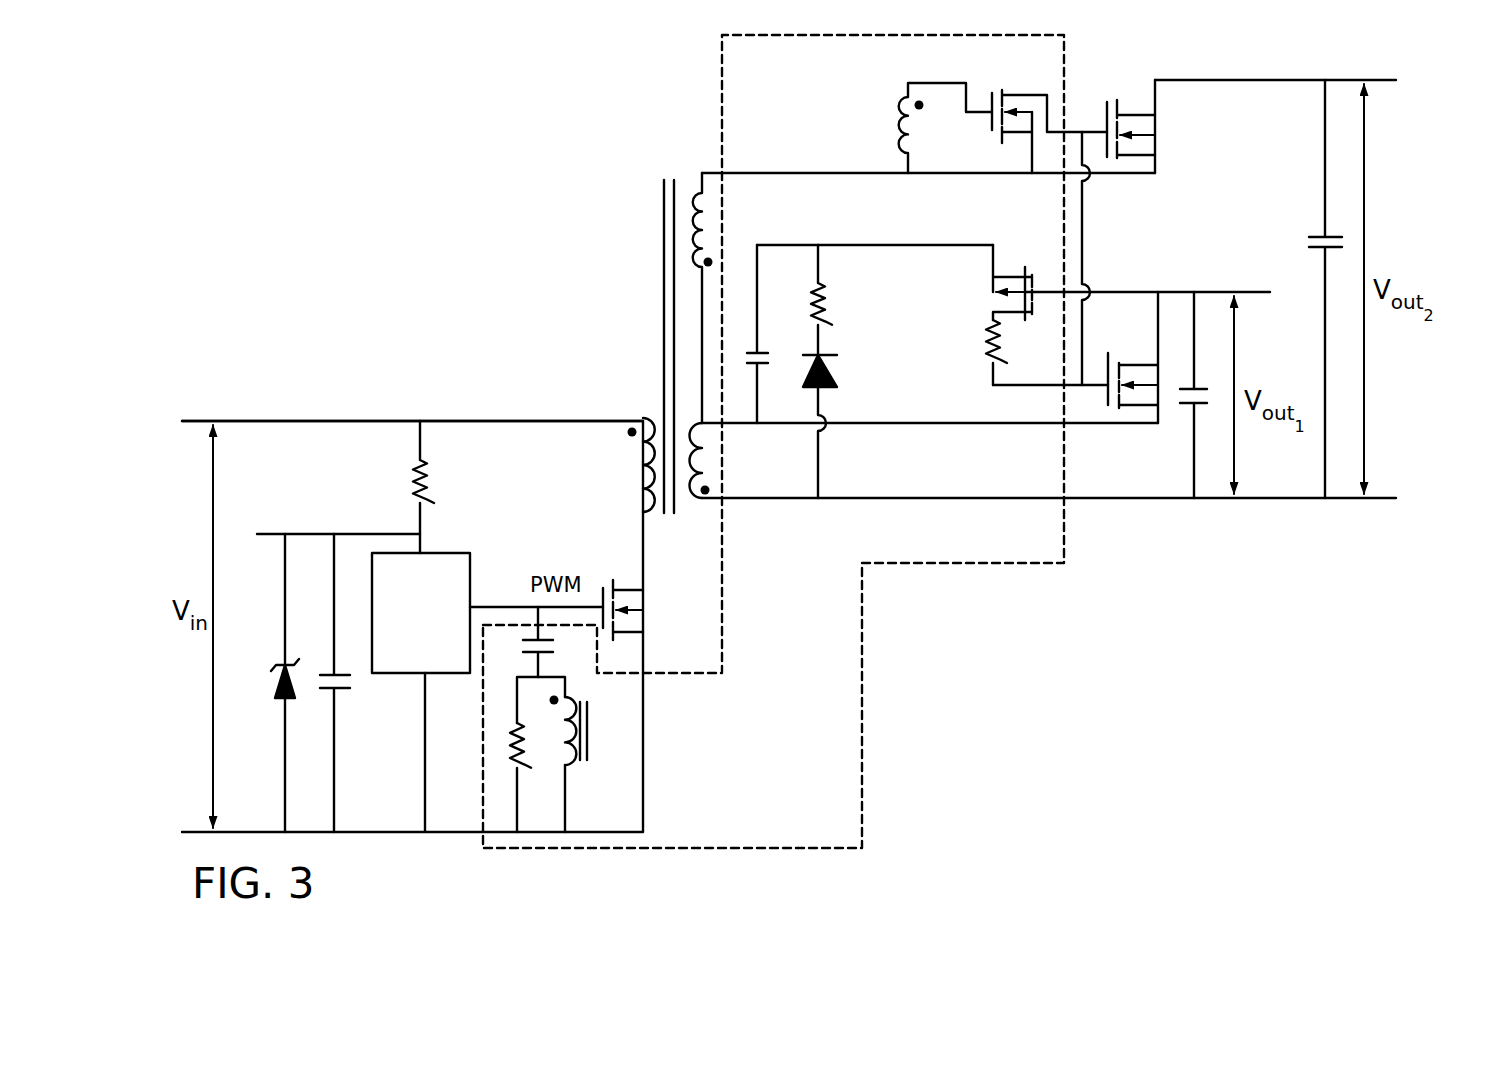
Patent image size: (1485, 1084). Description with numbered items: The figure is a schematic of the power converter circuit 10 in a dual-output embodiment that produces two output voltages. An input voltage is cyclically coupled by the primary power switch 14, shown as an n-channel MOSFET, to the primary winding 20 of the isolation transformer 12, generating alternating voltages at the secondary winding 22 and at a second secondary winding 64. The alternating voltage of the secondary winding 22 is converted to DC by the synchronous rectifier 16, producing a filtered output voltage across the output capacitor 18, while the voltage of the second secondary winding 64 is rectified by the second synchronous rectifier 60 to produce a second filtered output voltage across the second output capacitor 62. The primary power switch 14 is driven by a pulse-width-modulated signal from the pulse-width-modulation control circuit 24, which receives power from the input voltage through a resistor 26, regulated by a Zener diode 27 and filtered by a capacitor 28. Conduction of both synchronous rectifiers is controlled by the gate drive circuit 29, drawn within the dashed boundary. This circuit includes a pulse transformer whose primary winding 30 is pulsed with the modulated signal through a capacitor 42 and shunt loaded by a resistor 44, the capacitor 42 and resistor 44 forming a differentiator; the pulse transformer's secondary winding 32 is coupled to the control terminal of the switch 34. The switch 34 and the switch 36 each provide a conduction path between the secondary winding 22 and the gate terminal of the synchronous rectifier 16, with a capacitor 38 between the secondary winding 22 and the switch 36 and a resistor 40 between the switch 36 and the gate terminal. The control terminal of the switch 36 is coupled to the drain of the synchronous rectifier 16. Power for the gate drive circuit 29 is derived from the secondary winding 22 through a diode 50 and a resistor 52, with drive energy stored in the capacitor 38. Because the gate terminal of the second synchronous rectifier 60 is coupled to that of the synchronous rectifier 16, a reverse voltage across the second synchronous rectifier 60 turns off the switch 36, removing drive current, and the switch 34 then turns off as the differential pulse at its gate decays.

The power converter circuit 10 is at (472, 157).
The isolation transformer 12 is at (628, 368).
The primary power switch 14 is at (640, 608).
The synchronous rectifier 16 is at (1150, 366).
The output capacitor 18 is at (1190, 408).
The primary winding 20 is at (648, 468).
The secondary winding 22 is at (697, 456).
The PWM control circuit 24 is at (447, 553).
The resistor 26 is at (424, 482).
The Zener diode 27 is at (276, 697).
The capacitor 28 is at (352, 688).
The gate drive circuit 29 is at (862, 665).
The primary winding of the pulse transformer 30 is at (572, 762).
The secondary winding of the pulse transformer 32 is at (902, 152).
The switch 34 is at (996, 93).
The switch 36 is at (990, 290).
The capacitor 38 is at (770, 356).
The resistor 40 is at (993, 345).
The capacitor 42 is at (553, 648).
The resistor 44 is at (514, 760).
The diode 50 is at (826, 380).
The resistor 52 is at (826, 307).
The second synchronous rectifier 60 is at (1160, 133).
The second output capacitor 62 is at (1306, 242).
The second secondary winding 64 is at (700, 222).